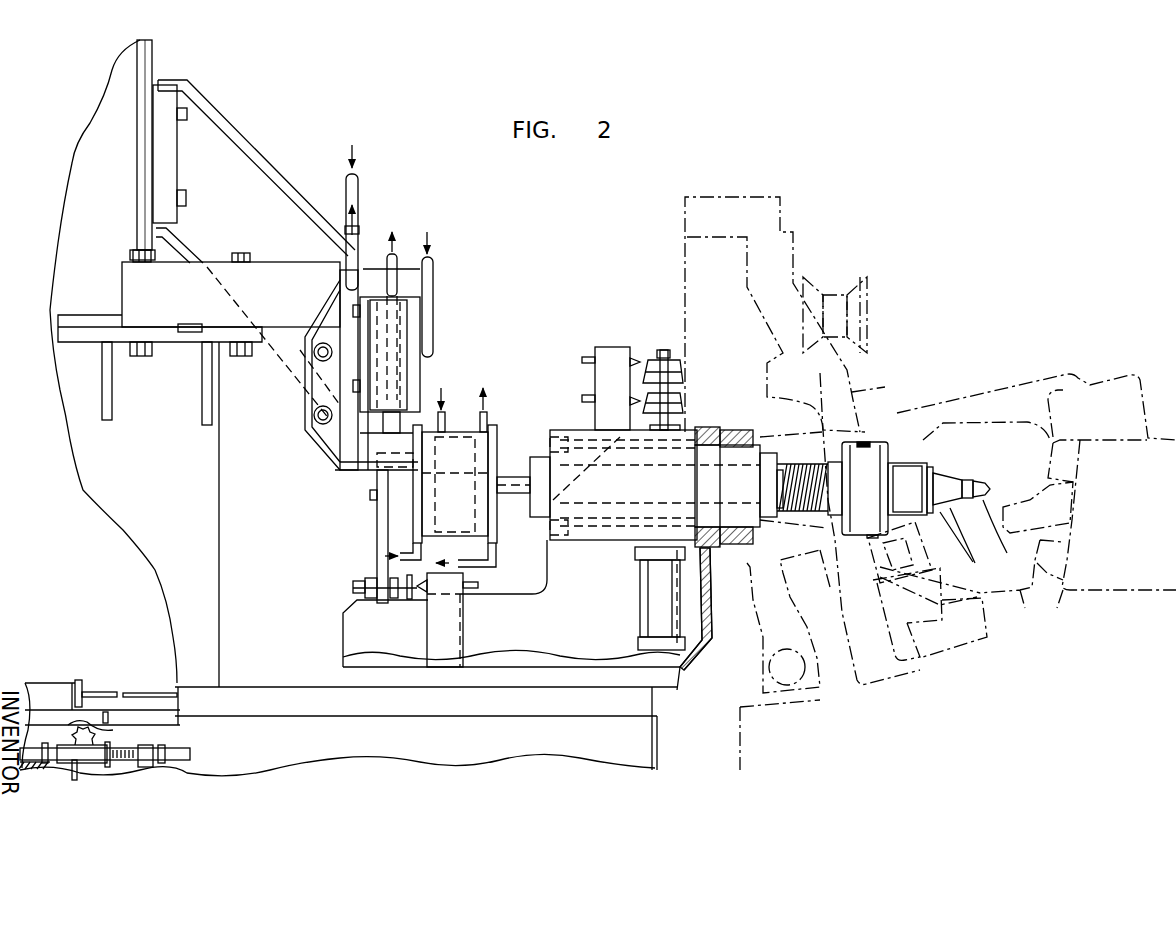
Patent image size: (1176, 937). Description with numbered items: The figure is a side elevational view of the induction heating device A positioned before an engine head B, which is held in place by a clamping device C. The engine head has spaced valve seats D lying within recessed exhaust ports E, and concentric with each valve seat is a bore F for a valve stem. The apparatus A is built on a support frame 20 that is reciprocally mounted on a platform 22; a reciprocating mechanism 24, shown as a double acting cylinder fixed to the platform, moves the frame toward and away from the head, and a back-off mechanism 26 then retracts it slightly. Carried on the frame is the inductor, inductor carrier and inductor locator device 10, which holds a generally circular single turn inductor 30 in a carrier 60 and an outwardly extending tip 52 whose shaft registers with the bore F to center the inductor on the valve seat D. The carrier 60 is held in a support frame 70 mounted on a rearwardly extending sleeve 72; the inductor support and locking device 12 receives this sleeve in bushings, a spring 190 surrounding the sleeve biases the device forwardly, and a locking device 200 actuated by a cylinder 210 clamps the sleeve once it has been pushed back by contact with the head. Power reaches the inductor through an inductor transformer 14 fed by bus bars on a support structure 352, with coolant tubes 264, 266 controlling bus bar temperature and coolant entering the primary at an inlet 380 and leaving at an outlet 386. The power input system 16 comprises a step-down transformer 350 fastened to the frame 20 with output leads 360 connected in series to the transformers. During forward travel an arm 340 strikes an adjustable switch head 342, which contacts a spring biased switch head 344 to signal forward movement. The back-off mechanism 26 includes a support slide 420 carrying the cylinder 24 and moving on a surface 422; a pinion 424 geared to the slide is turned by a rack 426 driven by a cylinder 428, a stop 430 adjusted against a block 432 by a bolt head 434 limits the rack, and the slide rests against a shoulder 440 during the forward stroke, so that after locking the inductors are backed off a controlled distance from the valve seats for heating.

The inductor, inductor carrier and inductor locator device 10 is at (862, 522).
The inductor support and locking device 12 is at (610, 522).
The inductor transformer 14 is at (460, 405).
The power input system 16 is at (374, 252).
The support frame 20 is at (203, 681).
The platform 22 is at (645, 742).
The reciprocating mechanism 24 is at (47, 676).
The back-off mechanism 26 is at (97, 775).
The inductor 30 is at (931, 510).
The tip 52 is at (988, 500).
The carrier 60 is at (907, 470).
The support frame 70 is at (867, 442).
The sleeve 72 is at (798, 472).
The spring 190 is at (794, 512).
The locking device 200 is at (687, 395).
The cylinder 210 is at (647, 608).
The coolant tube 264 is at (400, 253).
The coolant tube 266 is at (435, 292).
The arm 340 is at (382, 523).
The adjustable switch head 342 is at (403, 598).
The spring biased switch head 344 is at (445, 596).
The step-down transformer 350 is at (150, 78).
The support structure 352 is at (286, 278).
The output lead 360 is at (253, 177).
The inlet 380 is at (355, 178).
The outlet 386 is at (359, 232).
The support slide 420 is at (55, 708).
The surface 422 is at (107, 725).
The pinion 424 is at (74, 762).
The rack 426 is at (80, 755).
The cylinder 428 is at (46, 765).
The stop 430 is at (100, 760).
The block 432 is at (153, 745).
The bolt head 434 is at (165, 763).
The shoulder 440 is at (103, 697).
The induction heating device A is at (522, 258).
The engine head B is at (935, 398).
The clamping device C is at (850, 368).
The valve seat D is at (940, 465).
The exhaust port E is at (927, 438).
The bore F is at (983, 481).